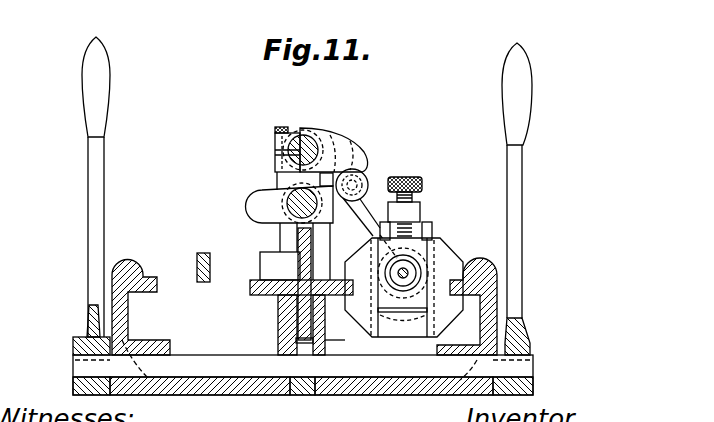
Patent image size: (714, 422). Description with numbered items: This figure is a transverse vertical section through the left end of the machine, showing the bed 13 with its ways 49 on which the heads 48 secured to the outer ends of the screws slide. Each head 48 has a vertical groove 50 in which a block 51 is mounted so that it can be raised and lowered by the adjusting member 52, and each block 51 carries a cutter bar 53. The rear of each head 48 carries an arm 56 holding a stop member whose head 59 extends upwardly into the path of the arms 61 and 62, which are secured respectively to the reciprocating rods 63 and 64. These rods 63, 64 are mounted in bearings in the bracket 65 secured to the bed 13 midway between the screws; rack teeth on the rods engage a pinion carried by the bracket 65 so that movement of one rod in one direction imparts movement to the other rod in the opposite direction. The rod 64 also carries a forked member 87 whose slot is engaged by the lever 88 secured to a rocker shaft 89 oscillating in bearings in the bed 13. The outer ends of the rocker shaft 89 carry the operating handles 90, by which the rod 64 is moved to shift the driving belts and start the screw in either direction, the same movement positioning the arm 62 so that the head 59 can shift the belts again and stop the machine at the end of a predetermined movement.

The bed 13 is at (127, 258).
The head 48 is at (441, 262).
The ways 49 is at (158, 288).
The vertical groove 50 is at (400, 328).
The block 51 is at (423, 247).
The adjusting member 52 is at (408, 177).
The cutter bar 53 is at (410, 273).
The arm 56 is at (378, 240).
The head 59 is at (368, 165).
The arm 61 is at (362, 126).
The arm 62 is at (257, 198).
The reciprocating rod 63 is at (305, 135).
The reciprocating rod 64 is at (290, 212).
The bracket 65 is at (300, 130).
The forked member 87 is at (262, 258).
The lever 88 is at (332, 326).
The rocker shaft 89 is at (218, 363).
The operating handles 90 is at (105, 86).